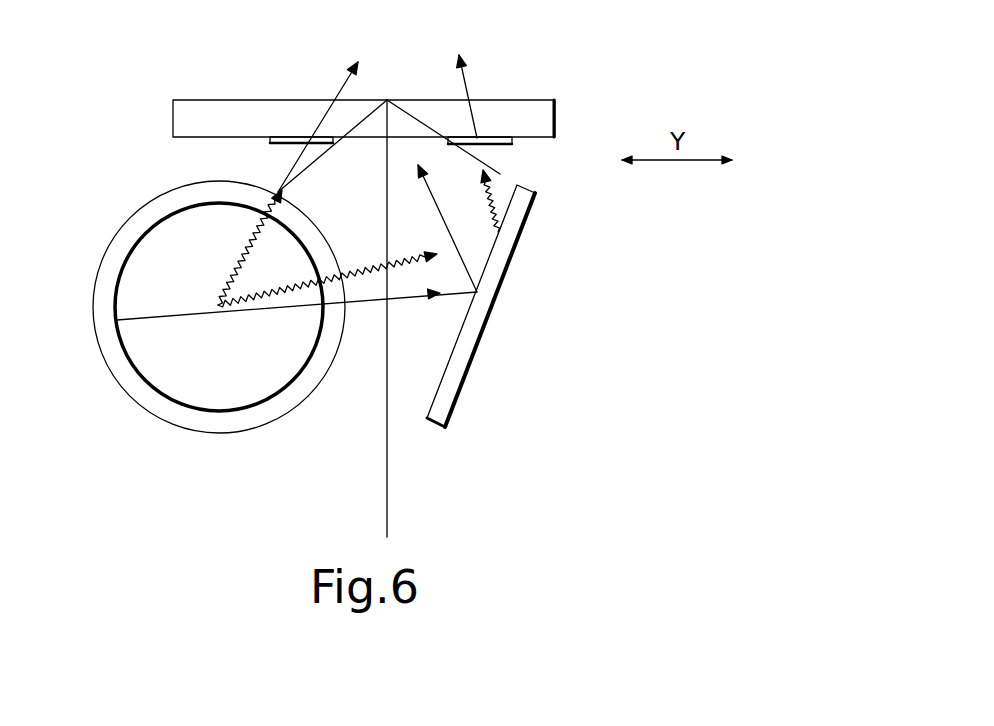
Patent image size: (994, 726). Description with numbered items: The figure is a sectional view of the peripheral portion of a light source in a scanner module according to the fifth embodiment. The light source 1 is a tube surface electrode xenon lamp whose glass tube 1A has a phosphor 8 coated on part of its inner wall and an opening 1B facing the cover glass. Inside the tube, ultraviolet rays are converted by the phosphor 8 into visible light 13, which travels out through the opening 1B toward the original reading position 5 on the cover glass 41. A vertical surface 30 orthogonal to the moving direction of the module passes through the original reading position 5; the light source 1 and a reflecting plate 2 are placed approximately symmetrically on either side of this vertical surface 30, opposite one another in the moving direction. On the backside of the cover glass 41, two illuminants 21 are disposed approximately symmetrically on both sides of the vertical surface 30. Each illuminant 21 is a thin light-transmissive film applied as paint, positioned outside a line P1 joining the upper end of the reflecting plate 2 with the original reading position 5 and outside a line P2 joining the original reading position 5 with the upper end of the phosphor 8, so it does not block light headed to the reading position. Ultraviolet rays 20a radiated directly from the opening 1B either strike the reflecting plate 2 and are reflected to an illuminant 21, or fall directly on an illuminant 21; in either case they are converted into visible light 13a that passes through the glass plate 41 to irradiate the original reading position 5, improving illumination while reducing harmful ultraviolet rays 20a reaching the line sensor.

The light source 1 is at (104, 220).
The glass tube 1A is at (97, 277).
The opening 1B is at (299, 352).
The phosphor 8 is at (158, 395).
The cover glass (glass plate) 41 is at (193, 105).
The illuminant 21 is at (257, 137).
The original reading position 5 is at (388, 100).
The vertical surface 30 is at (388, 498).
The visible light 13a is at (342, 86).
The visible light 13 is at (407, 297).
The ultraviolet rays 20a is at (243, 260).
The reflecting plate 2 is at (465, 365).
The line connecting upper end of reflecting plate with original reading position P1 is at (499, 169).
The line connecting original reading position with upper end of phosphor P2 is at (300, 168).